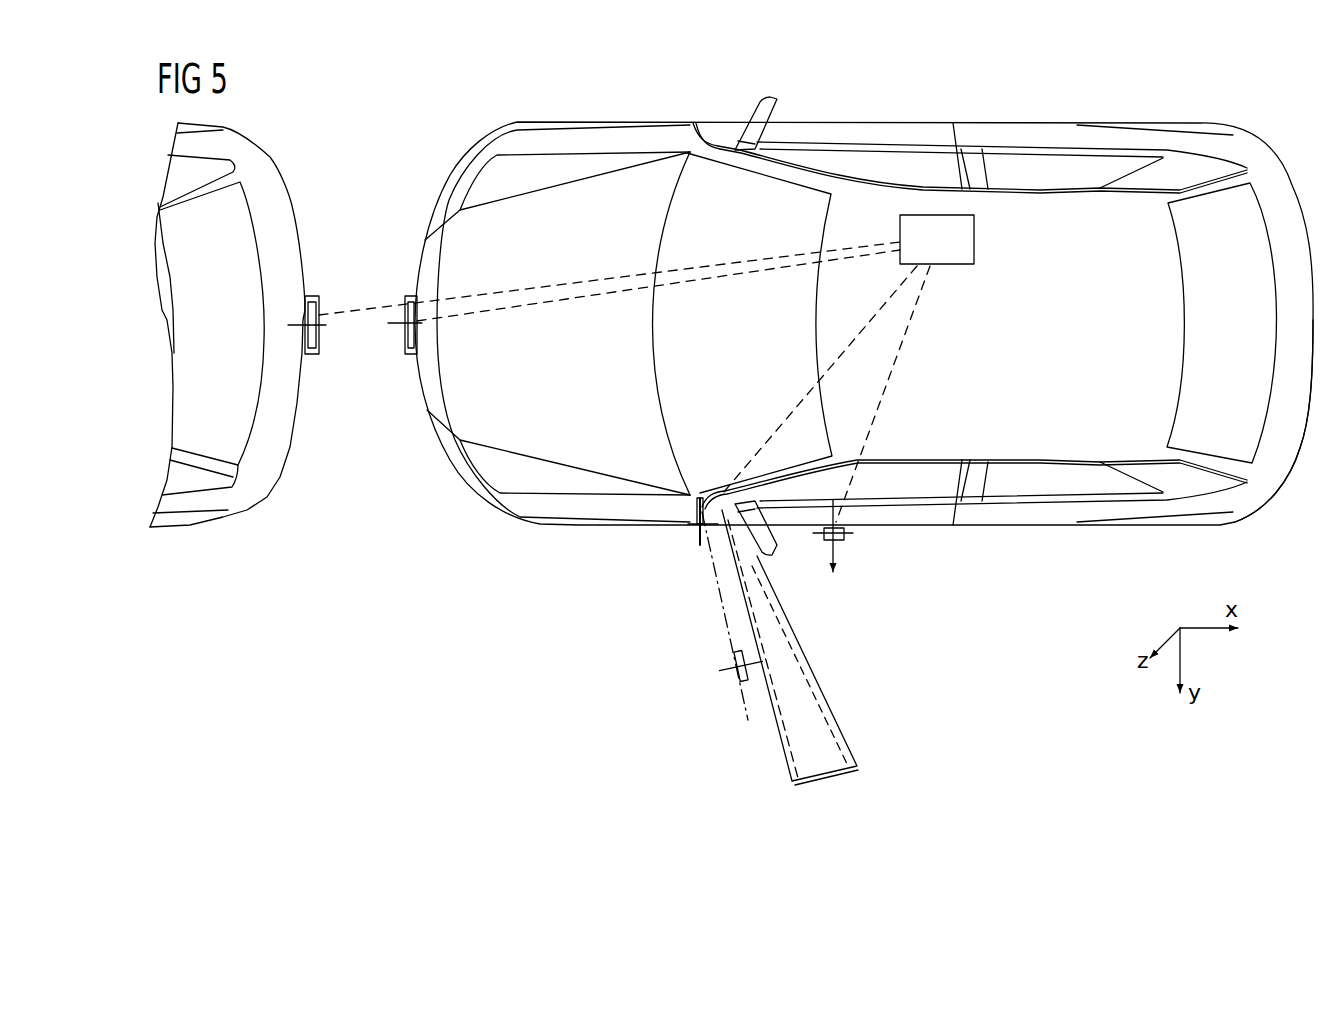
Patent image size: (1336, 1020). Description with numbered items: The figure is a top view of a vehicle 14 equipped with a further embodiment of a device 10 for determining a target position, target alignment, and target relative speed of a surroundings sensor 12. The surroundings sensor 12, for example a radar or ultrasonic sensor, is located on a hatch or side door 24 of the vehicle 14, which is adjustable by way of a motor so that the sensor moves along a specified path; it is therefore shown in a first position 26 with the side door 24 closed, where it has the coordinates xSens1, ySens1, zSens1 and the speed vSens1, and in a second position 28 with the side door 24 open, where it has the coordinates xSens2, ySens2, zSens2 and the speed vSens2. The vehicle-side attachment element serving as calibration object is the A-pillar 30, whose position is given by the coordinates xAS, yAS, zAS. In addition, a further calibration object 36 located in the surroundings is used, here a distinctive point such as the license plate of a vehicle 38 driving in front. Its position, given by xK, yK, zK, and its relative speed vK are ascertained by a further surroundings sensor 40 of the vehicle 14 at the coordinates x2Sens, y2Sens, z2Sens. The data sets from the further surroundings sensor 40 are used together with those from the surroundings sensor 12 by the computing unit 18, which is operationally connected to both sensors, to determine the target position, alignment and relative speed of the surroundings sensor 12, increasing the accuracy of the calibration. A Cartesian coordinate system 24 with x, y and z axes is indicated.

The device 10 is at (1005, 605).
The surroundings sensor 12 is at (722, 654).
The vehicle 14 is at (1292, 440).
The computing unit 18 is at (976, 240).
The hatch or side door 24 is at (740, 617).
The first position 26 is at (850, 557).
The second position 28 is at (747, 707).
The A-pillar 30 is at (695, 556).
The further calibration object 36 is at (317, 287).
The vehicle driving in front 38 is at (275, 440).
The further surroundings sensor 40 is at (399, 366).